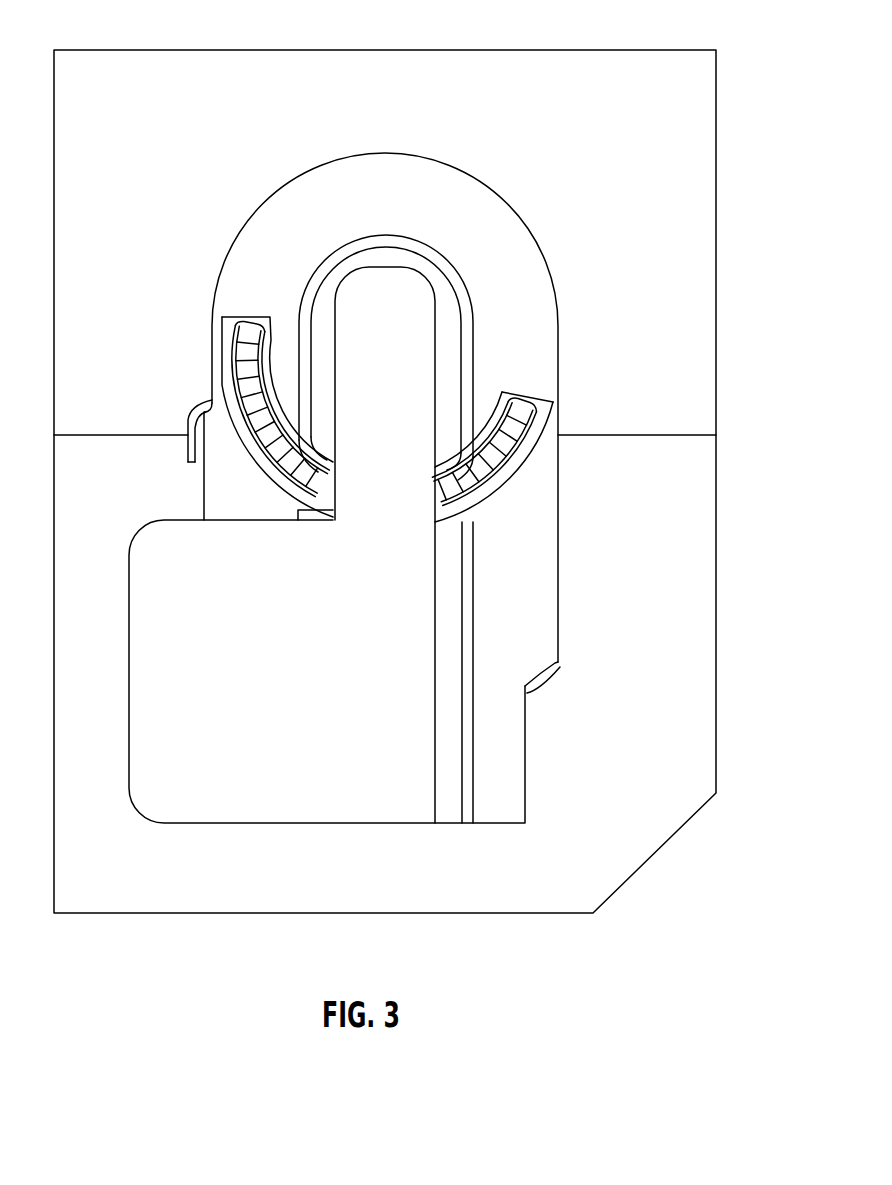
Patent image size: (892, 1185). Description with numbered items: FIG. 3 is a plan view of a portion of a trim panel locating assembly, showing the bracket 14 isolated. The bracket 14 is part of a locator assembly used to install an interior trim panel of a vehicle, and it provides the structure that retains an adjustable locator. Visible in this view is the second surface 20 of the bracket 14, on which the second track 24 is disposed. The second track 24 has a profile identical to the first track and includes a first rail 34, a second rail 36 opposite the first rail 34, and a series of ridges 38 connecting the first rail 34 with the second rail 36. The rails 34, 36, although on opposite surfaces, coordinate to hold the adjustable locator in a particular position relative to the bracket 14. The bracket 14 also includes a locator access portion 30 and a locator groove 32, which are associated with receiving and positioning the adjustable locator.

The bracket 14 is at (549, 50).
The second surface 20 is at (633, 90).
The second track 24 is at (535, 438).
The locator access portion 30 is at (258, 822).
The locator groove 32 is at (335, 410).
The first rail 34 is at (515, 490).
The second rail 36 is at (503, 412).
The ridges 38 is at (243, 372).